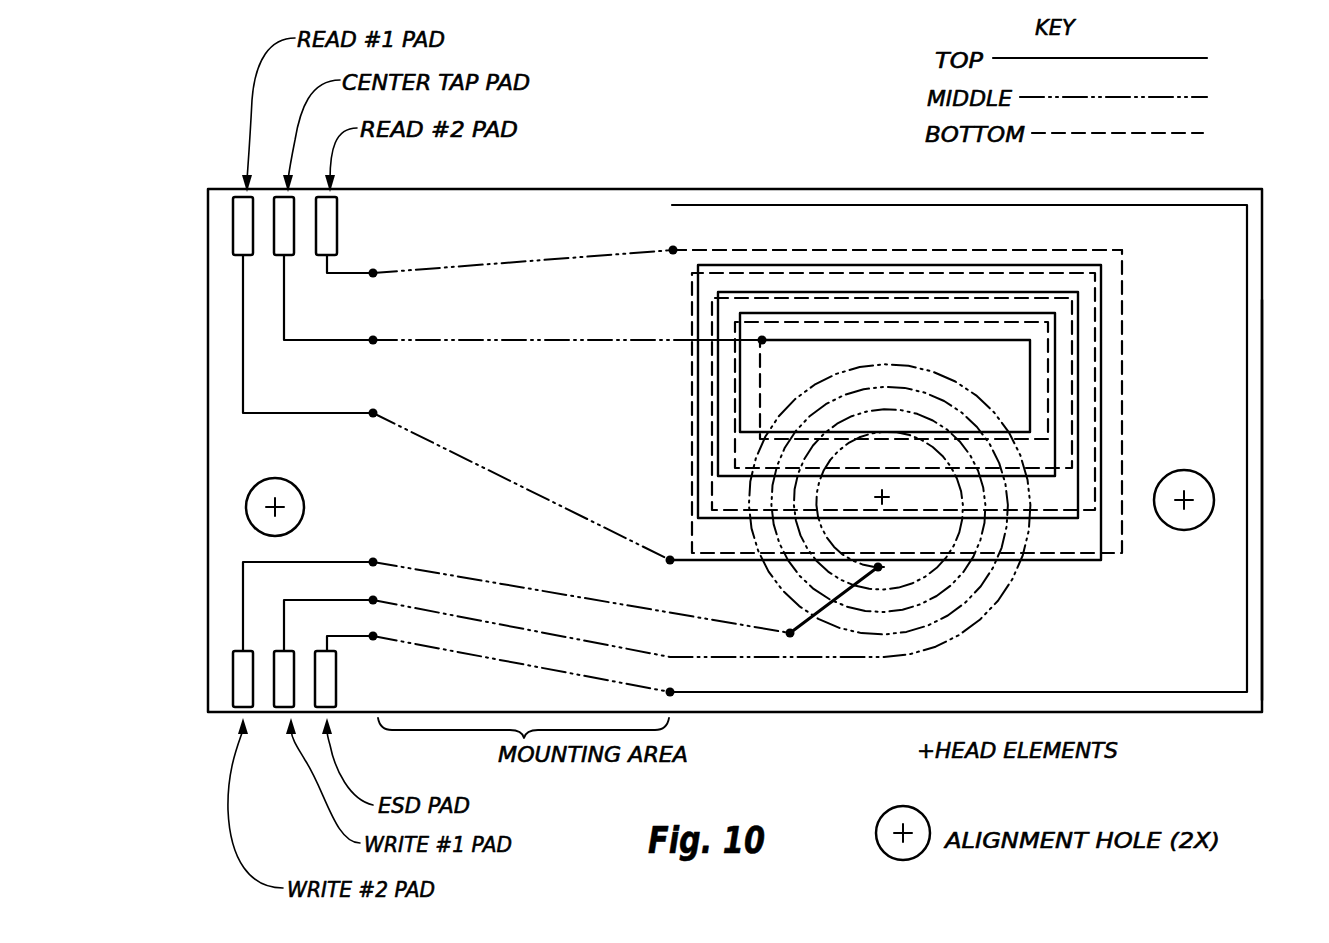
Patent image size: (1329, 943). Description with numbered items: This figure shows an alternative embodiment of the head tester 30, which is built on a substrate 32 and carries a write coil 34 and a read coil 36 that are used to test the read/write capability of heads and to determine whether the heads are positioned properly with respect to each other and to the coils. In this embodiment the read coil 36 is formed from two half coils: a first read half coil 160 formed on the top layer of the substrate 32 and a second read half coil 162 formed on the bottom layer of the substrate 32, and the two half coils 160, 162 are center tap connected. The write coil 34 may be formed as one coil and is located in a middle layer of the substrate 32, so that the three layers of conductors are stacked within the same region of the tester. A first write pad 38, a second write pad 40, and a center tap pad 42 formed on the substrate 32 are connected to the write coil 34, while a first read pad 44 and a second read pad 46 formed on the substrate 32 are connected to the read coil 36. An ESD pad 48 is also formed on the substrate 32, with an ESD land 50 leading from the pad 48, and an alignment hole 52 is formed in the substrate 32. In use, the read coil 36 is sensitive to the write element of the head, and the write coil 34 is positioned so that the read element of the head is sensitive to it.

The head tester 30 is at (1306, 172).
The substrate 32 is at (1262, 535).
The write coil 34 is at (987, 610).
The read coil 36 is at (1147, 408).
The first write pad 38 is at (233, 663).
The second write pad 40 is at (337, 672).
The center tap pad 42 is at (278, 708).
The first read pad 44 is at (276, 203).
The second read pad 46 is at (233, 243).
The ESD pad 48 is at (338, 233).
The ESD land 50 is at (748, 250).
The alignment hole 52 is at (247, 497).
The first read half coil 160 is at (1101, 337).
The second read half coil 162 is at (1123, 272).